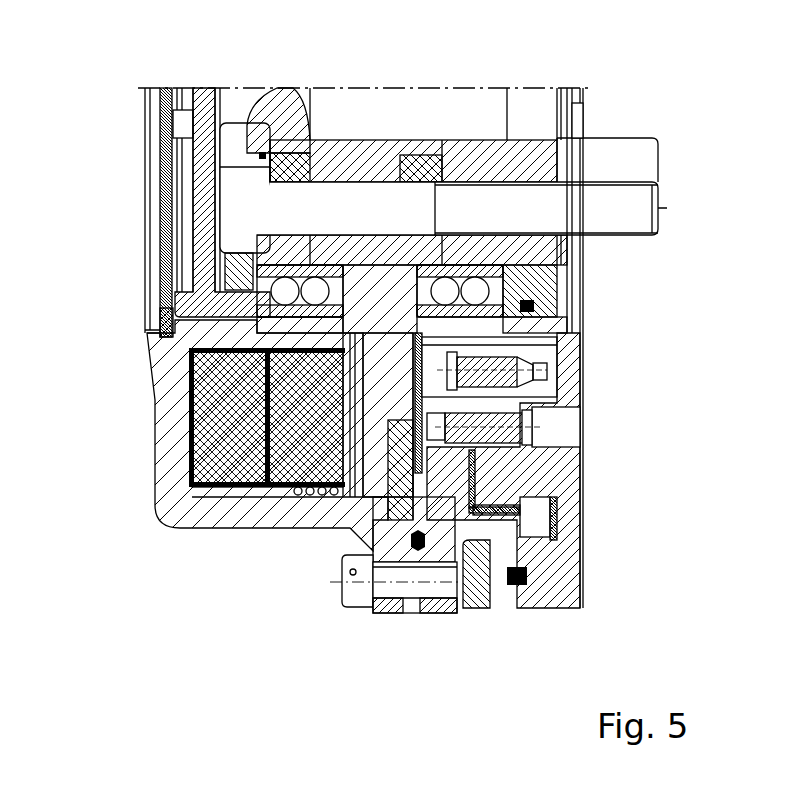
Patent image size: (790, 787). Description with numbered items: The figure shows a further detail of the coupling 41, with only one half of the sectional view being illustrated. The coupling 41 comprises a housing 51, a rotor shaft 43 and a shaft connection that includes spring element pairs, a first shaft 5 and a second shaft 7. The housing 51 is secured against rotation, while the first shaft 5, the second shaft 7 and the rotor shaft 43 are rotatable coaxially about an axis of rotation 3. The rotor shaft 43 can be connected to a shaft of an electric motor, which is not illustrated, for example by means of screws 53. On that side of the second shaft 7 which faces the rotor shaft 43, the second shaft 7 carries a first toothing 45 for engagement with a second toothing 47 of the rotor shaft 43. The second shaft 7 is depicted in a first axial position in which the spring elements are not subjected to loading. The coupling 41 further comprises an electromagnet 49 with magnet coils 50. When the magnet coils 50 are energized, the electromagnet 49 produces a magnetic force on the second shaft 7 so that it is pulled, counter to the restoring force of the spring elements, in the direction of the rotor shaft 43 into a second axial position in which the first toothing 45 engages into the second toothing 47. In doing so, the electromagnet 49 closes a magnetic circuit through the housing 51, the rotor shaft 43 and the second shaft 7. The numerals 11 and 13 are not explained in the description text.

The coupling 41 is at (78, 62).
The axis of rotation 3 is at (140, 88).
The screws 53 is at (167, 152).
The electromagnet 49 is at (172, 414).
The magnet coils 50 is at (222, 492).
The rotor shaft 43 is at (400, 503).
The second toothing 47 is at (430, 492).
The first screw connection 11 is at (545, 355).
The second screw connection 13 is at (535, 418).
The first shaft 5 is at (585, 467).
The first toothing 45 is at (485, 497).
The housing 51 is at (385, 615).
The second shaft 7 is at (440, 547).